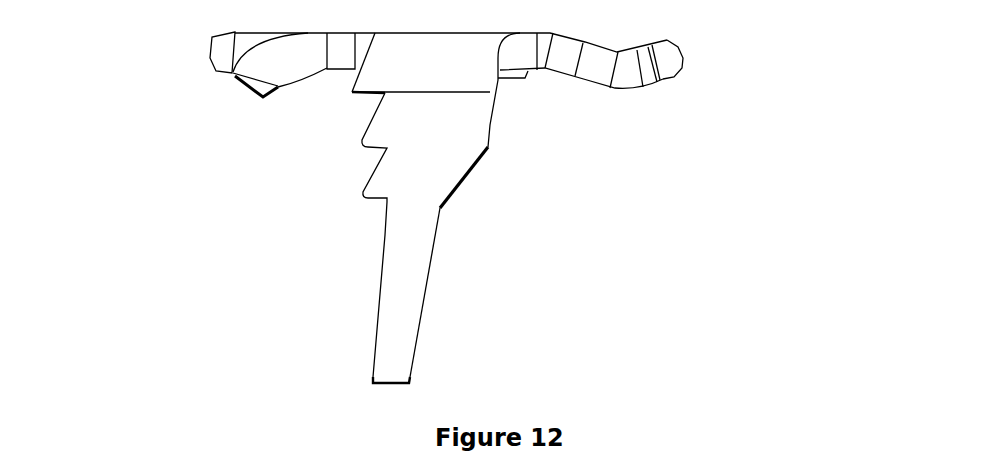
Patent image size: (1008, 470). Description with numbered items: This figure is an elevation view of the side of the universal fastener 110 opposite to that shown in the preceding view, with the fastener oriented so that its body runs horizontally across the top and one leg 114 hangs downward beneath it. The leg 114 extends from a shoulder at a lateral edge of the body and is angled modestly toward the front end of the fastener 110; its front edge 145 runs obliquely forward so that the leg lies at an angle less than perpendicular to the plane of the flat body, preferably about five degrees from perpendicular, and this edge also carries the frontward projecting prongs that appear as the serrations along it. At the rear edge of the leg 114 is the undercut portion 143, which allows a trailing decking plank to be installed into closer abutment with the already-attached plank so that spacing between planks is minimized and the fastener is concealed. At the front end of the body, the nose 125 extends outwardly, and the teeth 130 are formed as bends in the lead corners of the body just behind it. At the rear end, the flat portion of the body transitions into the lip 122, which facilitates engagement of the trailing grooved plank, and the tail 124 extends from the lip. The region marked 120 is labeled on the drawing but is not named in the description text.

The universal fastener 110 is at (315, 165).
The leg 114 is at (395, 325).
The segment of arm 120 is at (623, 70).
The lip 122 is at (648, 77).
The tail 124 is at (672, 57).
The nose 125 is at (225, 51).
The teeth 130 is at (248, 48).
The undercut portion 143 is at (467, 178).
The front edge 145 is at (383, 256).